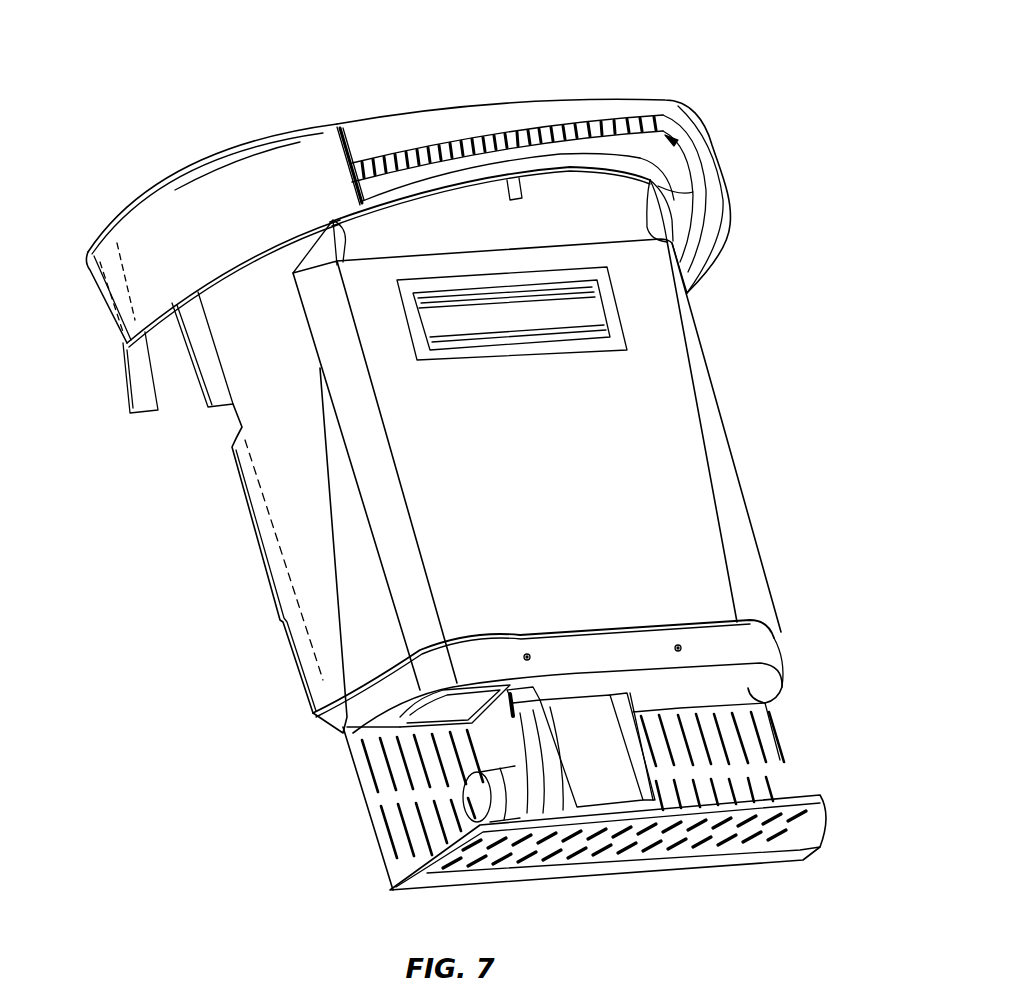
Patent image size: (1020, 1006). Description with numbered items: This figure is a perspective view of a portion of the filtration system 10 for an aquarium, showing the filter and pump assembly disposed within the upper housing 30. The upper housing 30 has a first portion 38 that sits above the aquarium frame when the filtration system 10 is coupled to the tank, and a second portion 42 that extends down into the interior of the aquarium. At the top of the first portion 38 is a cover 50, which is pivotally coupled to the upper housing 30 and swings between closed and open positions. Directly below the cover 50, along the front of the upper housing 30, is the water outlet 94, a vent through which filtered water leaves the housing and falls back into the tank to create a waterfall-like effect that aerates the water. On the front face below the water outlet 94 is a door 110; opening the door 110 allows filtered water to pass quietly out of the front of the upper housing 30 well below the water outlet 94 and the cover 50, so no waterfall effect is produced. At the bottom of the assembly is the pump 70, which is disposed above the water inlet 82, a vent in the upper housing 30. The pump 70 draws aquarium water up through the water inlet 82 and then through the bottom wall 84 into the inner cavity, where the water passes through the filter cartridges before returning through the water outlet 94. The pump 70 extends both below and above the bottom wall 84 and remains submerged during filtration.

The filtration system 10 is at (652, 68).
The upper housing 30 is at (133, 238).
The first portion 38 is at (152, 214).
The second portion 42 is at (316, 542).
The cover 50 is at (442, 130).
The pump 70 is at (497, 746).
The water inlet 82 is at (745, 828).
The bottom wall 84 is at (750, 688).
The water outlet 94 is at (531, 128).
The door 110 is at (572, 316).